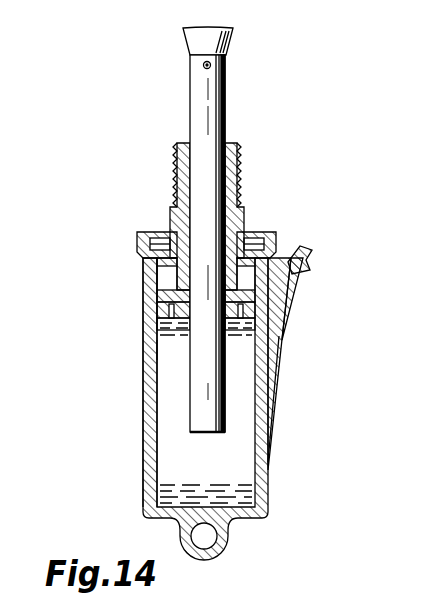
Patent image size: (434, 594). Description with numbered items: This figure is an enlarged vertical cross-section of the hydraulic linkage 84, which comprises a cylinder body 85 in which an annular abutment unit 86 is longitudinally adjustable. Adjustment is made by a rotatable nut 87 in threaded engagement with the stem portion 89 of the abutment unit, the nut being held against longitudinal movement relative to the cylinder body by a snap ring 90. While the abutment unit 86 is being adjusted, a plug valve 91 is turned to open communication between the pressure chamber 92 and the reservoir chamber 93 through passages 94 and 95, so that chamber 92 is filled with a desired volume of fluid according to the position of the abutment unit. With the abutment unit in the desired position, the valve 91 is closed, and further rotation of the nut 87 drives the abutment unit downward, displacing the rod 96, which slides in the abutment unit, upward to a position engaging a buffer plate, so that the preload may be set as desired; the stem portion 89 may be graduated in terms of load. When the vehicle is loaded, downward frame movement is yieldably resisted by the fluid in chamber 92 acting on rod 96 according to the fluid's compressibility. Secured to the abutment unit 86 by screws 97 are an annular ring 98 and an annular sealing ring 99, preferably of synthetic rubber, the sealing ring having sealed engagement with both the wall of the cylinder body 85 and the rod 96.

The linkage 84 is at (268, 460).
The cylinder body 85 is at (143, 393).
The abutment unit 86 is at (157, 297).
The rotatable nut 87 is at (242, 211).
The stem portion 89 is at (178, 160).
The snap ring 90 is at (252, 231).
The plug valve 91 is at (303, 256).
The pressure chamber 92 is at (206, 474).
The reservoir chamber 93 is at (160, 276).
The passage 94 is at (283, 355).
The passage 95 is at (295, 300).
The rod 96 is at (223, 103).
The screws 97 is at (153, 348).
The annular ring 98 is at (160, 321).
The annular sealing ring 99 is at (160, 305).